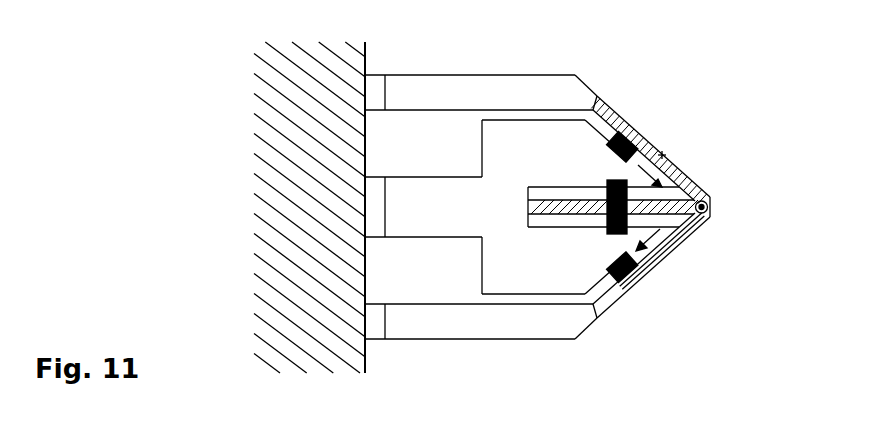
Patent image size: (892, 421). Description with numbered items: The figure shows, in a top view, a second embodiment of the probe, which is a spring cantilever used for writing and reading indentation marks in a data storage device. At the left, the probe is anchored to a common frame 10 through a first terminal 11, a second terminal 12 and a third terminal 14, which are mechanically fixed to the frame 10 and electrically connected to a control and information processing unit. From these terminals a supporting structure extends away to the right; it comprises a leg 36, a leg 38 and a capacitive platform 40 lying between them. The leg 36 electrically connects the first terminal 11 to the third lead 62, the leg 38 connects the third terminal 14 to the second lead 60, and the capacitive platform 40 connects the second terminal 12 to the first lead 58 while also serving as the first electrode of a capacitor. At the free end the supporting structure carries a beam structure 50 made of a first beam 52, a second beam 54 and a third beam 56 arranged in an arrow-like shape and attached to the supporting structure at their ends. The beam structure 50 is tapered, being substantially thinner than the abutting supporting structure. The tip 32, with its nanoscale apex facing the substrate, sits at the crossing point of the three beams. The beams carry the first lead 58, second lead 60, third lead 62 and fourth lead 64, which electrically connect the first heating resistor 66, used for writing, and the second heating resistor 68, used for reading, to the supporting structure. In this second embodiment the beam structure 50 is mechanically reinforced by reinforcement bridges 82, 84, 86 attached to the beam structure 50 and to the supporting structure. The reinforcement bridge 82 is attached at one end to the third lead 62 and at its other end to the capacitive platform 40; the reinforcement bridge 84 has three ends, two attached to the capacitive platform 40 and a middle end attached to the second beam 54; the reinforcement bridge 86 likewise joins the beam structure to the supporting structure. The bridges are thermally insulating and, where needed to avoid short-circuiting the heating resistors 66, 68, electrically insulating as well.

The frame 10 is at (276, 279).
The first terminal 11 is at (378, 78).
The second terminal 12 is at (378, 180).
The third terminal 14 is at (378, 307).
The tip 32 is at (710, 203).
The leg 36 is at (453, 75).
The leg 38 is at (445, 340).
The capacitive platform 40 is at (467, 224).
The beam structure 50 is at (694, 141).
The first beam 52 is at (608, 98).
The second beam 54 is at (572, 212).
The third beam 56 is at (653, 265).
The first lead 58 is at (542, 188).
The second lead 60 is at (682, 240).
The third lead 62 is at (627, 136).
The fourth lead 64 is at (687, 187).
The first heating resistor 66 is at (697, 227).
The second heating resistor 68 is at (662, 152).
The reinforcement bridge 82 is at (622, 135).
The reinforcement bridge 84 is at (630, 184).
The reinforcement bridge 86 is at (630, 290).